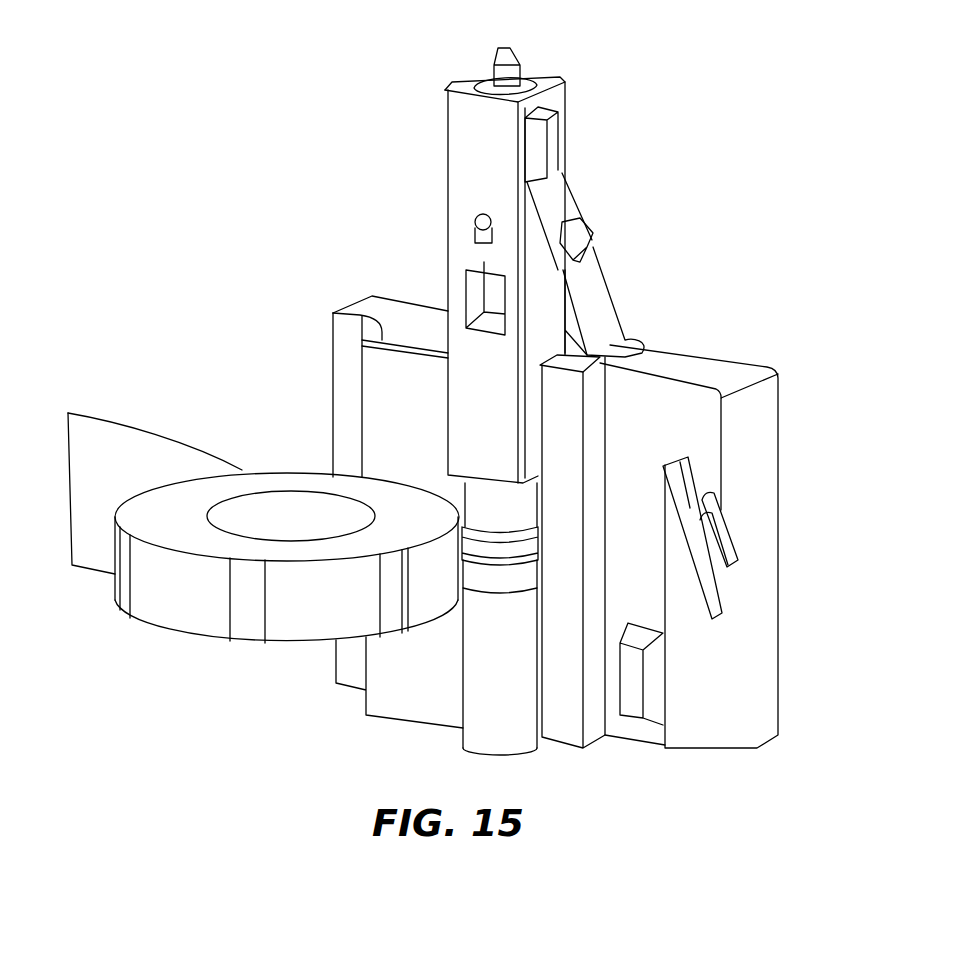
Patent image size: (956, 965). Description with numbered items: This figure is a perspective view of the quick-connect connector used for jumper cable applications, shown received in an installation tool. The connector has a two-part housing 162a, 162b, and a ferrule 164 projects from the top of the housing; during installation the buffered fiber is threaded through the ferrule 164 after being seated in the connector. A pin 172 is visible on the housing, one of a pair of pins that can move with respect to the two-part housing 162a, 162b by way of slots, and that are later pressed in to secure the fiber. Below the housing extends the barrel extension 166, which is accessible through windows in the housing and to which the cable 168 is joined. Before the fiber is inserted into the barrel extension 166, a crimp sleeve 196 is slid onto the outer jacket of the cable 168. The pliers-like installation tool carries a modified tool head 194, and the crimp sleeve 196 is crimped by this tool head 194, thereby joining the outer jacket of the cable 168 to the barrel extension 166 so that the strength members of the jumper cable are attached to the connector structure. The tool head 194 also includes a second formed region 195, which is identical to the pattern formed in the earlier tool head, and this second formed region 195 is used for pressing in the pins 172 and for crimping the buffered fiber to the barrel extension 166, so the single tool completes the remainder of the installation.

The ferrule 164 is at (503, 78).
The first part of two-part housing 162a is at (477, 153).
The pin 172 is at (476, 226).
The second part of two-part housing 162b is at (497, 253).
The barrel extension 166 is at (510, 506).
The cable 168 is at (490, 717).
The tool head 194 is at (713, 672).
The second formed region 195 is at (632, 577).
The crimp sleeve 196 is at (488, 560).